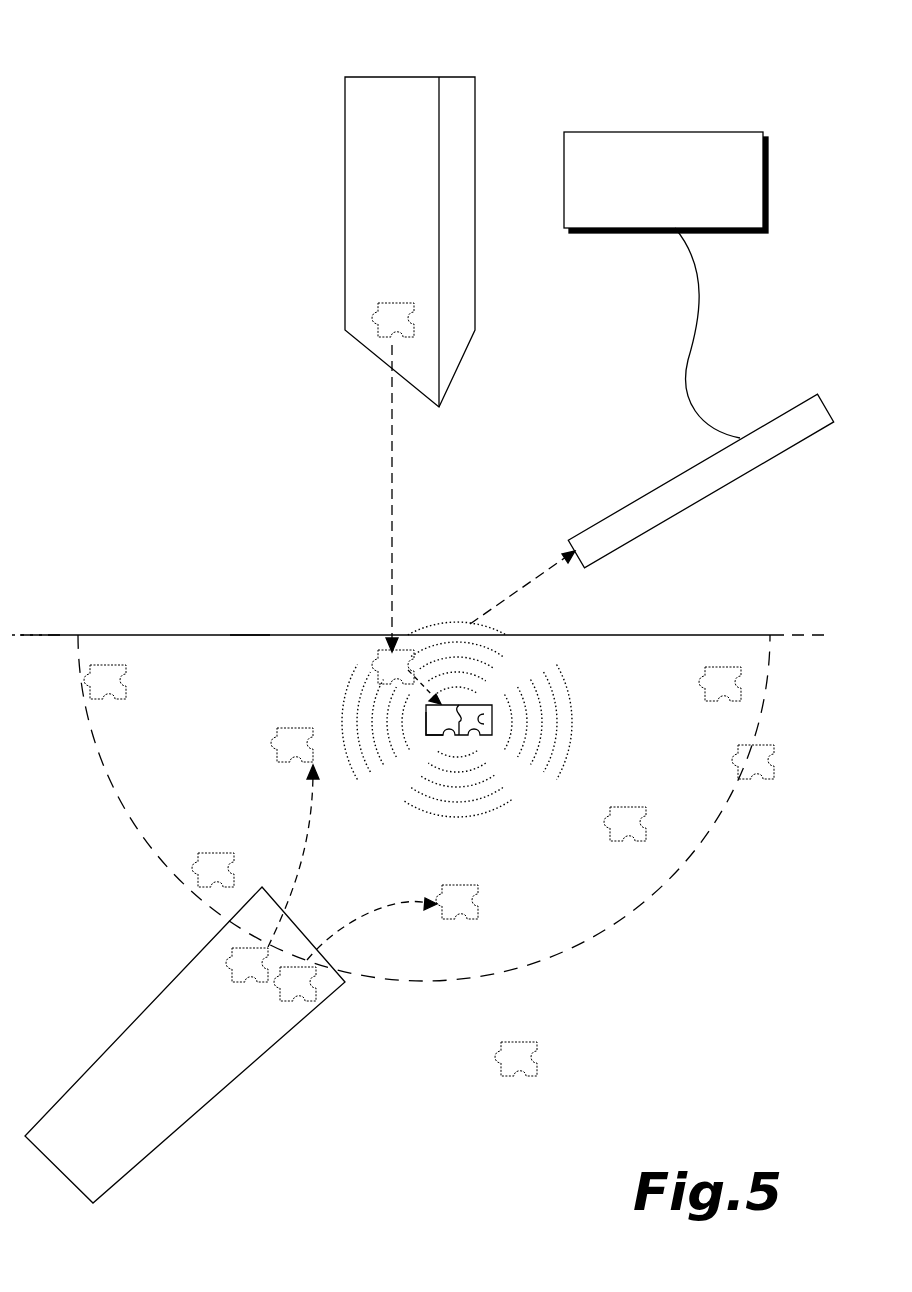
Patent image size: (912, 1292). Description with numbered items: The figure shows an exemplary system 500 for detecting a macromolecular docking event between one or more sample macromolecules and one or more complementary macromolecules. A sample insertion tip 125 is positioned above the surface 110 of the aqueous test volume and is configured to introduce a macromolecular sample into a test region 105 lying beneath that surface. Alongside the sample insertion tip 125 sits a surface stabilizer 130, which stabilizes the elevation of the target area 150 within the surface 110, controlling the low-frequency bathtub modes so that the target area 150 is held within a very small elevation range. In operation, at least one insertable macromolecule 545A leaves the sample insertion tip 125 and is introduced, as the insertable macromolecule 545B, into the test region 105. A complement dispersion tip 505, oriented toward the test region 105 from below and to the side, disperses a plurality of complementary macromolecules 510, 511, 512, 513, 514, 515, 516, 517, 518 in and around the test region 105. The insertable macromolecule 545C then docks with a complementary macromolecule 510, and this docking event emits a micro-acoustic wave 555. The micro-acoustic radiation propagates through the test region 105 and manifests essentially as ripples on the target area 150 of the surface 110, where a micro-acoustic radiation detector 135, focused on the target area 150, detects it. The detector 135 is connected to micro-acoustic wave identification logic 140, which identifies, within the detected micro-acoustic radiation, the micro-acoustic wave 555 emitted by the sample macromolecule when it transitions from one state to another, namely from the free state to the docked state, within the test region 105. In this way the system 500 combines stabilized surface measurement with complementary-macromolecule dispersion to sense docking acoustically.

The system for detecting a macromolecular docking event 500 is at (199, 63).
The test region 105 is at (595, 940).
The surface 110 is at (27, 635).
The sample insertion tip 125 is at (345, 168).
The surface stabilizer 130 is at (476, 103).
The micro-acoustic radiation detector 135 is at (712, 500).
The micro-acoustic wave identification logic 140 is at (604, 232).
The target area 150 is at (250, 635).
The complement dispersion tip 505 is at (265, 1053).
The complementary macromolecule 510 is at (510, 738).
The complementary macromolecule 511 is at (745, 680).
The complementary macromolecule 512 is at (760, 780).
The complementary macromolecule 513 is at (630, 808).
The complementary macromolecule 514 is at (476, 902).
The complementary macromolecule 515 is at (540, 1062).
The complementary macromolecule 516 is at (275, 750).
The complementary macromolecule 517 is at (205, 853).
The complementary macromolecule 518 is at (130, 683).
The insertable macromolecule 545A is at (376, 318).
The insertable macromolecule 545B is at (376, 668).
The insertable macromolecule 545C is at (430, 735).
The micro-acoustic wave 555 is at (453, 622).